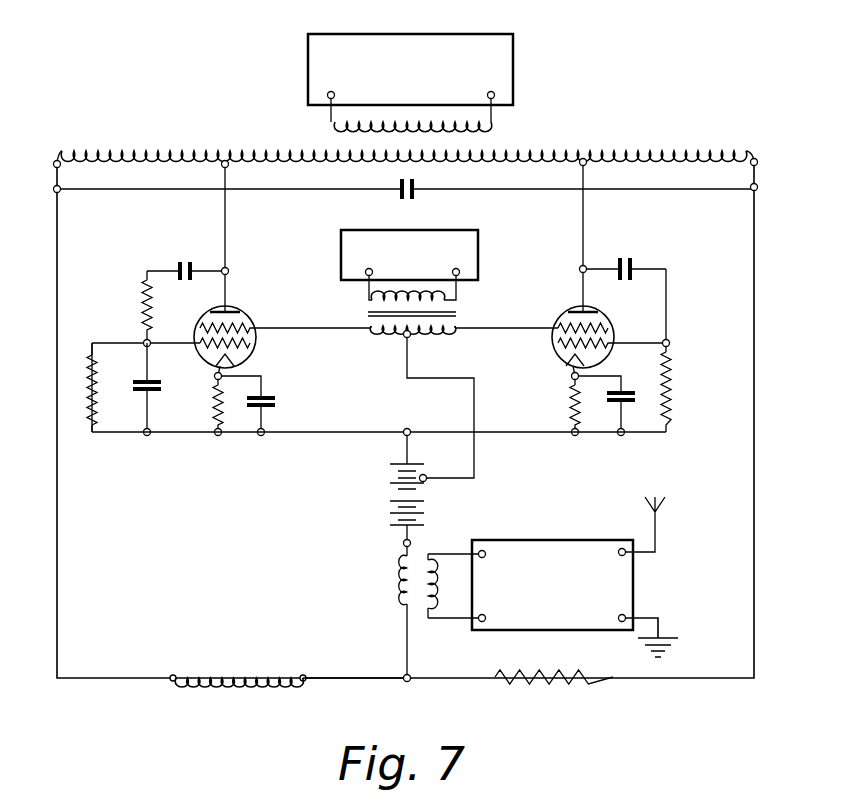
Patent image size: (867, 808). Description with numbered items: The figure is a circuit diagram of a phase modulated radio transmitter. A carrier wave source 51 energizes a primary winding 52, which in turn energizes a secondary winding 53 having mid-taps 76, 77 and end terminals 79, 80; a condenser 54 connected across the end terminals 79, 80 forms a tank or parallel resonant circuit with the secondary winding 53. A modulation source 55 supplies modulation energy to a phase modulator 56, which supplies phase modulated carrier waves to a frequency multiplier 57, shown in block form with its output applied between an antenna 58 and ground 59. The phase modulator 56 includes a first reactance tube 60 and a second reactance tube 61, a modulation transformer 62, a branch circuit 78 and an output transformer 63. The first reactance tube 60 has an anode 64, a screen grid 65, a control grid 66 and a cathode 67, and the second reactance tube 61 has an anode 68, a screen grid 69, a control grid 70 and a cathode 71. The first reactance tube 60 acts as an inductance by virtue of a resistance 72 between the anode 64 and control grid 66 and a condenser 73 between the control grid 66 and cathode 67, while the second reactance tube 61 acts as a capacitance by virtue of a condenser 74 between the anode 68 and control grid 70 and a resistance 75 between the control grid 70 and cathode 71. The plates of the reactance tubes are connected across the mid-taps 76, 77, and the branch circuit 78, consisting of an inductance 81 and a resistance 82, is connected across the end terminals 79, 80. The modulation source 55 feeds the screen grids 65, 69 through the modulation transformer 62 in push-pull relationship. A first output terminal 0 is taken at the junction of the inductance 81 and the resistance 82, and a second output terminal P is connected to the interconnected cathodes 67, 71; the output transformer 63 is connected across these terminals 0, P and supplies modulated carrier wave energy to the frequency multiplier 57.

The carrier wave source 51 is at (513, 53).
The primary winding 52 is at (491, 130).
The secondary winding 53 is at (590, 150).
The condenser 54 is at (414, 186).
The modulation source 55 is at (478, 248).
The phase modulator 56 is at (346, 414).
The frequency multiplier 57 is at (566, 627).
The antenna 58 is at (662, 505).
The ground 59 is at (668, 644).
The first reactance tube 60 is at (254, 320).
The second reactance tube 61 is at (610, 352).
The modulation transformer 62 is at (456, 324).
The output transformer 63 is at (400, 592).
The anode 64 is at (235, 308).
The screen grid 65 is at (204, 326).
The control grid 66 is at (252, 342).
The cathode 67 is at (238, 360).
The anode 68 is at (592, 308).
The screen grid 69 is at (612, 326).
The control grid 70 is at (560, 345).
The cathode 71 is at (572, 372).
The resistance 72 is at (144, 294).
The condenser 73 is at (150, 390).
The condenser 74 is at (633, 266).
The resistance 75 is at (670, 412).
The mid-tap 76 is at (228, 166).
The mid-tap 77 is at (586, 166).
The branch circuit 78 is at (332, 667).
The end terminal 79 is at (54, 165).
The end terminal 80 is at (757, 162).
The inductance 81 is at (215, 672).
The resistance 82 is at (592, 682).
The second output terminal P is at (404, 543).
The first output terminal 0 is at (408, 682).